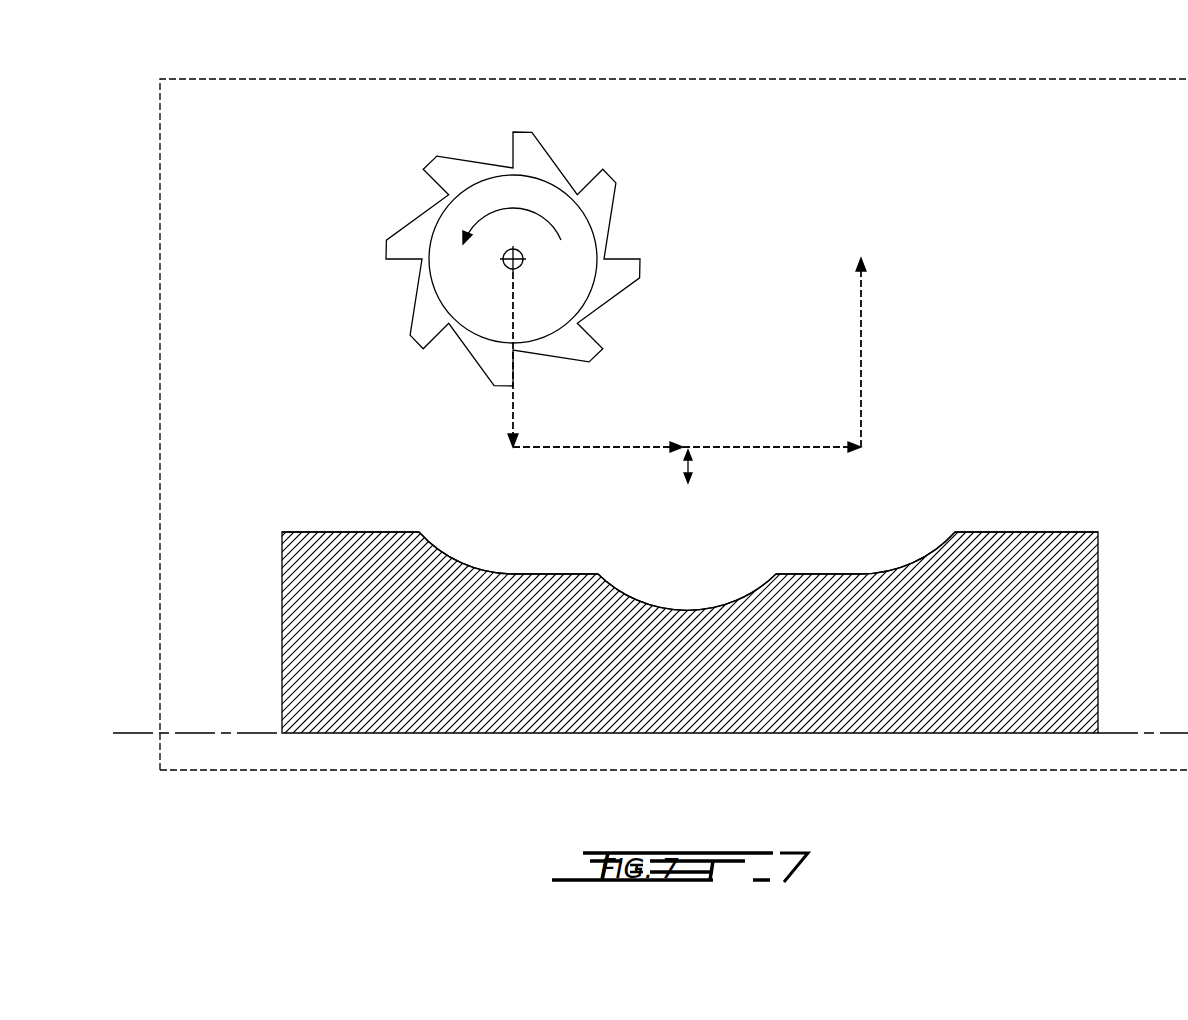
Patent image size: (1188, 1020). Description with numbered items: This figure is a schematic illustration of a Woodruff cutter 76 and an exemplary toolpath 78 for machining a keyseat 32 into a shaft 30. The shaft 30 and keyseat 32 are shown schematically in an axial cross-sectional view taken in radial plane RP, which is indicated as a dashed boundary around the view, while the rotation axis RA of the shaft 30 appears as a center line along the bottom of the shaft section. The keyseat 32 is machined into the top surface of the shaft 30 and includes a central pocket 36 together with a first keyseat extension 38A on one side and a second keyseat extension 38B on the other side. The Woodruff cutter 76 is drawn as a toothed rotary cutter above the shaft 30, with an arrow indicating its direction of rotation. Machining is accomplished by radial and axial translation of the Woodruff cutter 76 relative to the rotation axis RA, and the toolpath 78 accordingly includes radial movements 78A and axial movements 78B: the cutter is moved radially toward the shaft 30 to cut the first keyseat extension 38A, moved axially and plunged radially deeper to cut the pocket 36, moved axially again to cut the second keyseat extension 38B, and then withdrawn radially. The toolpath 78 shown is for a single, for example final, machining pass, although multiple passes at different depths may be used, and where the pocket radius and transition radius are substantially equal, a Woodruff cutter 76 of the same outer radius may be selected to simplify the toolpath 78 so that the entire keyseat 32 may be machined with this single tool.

The radial plane RP is at (233, 78).
The rotation axis RA is at (282, 733).
The shaft 30 is at (318, 647).
The keyseat 32 is at (857, 528).
The pocket 36 is at (689, 595).
The first keyseat extension 38A is at (512, 555).
The second keyseat extension 38B is at (830, 555).
The Woodruff cutter 76 is at (632, 165).
The toolpath 78 is at (905, 333).
The radial movement 78A is at (511, 409).
The axial movement 78B is at (557, 450).